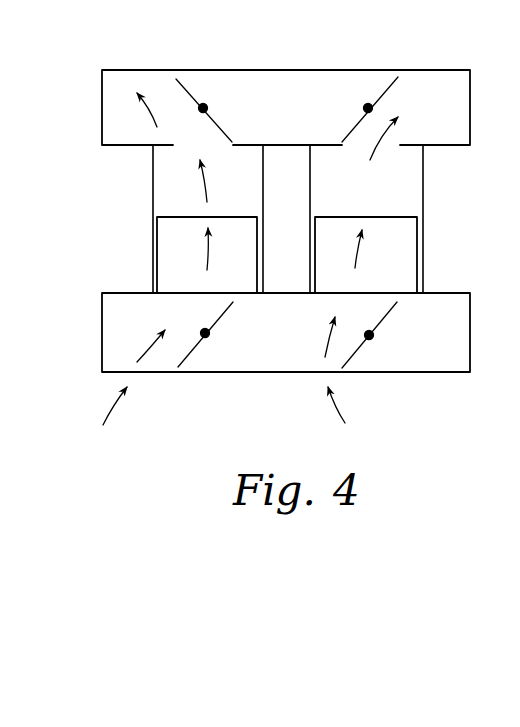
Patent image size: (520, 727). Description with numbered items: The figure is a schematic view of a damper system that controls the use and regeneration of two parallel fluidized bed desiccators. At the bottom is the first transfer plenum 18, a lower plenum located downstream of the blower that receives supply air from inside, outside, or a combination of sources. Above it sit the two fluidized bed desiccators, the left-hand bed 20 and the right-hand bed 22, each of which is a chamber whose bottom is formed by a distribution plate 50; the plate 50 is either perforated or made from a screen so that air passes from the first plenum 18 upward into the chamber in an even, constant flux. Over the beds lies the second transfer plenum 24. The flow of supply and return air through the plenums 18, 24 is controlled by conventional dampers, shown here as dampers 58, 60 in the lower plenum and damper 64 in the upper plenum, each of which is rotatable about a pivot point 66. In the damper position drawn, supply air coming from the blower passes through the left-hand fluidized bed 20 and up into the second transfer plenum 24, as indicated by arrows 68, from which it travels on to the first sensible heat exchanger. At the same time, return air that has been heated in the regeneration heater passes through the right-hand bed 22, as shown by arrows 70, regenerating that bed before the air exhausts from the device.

The first transfer plenum 18 is at (102, 323).
The left-hand fluidized bed desiccator 20 is at (177, 245).
The right-hand fluidized bed desiccator 22 is at (397, 243).
The second transfer plenum 24 is at (100, 90).
The distribution plate 50 is at (200, 293).
The damper 58 is at (193, 352).
The damper 60 is at (352, 357).
The damper 64 is at (393, 80).
The pivot point 66 is at (203, 108).
The supply air flow path 68 is at (150, 113).
The return air flow arrows 70 is at (367, 170).